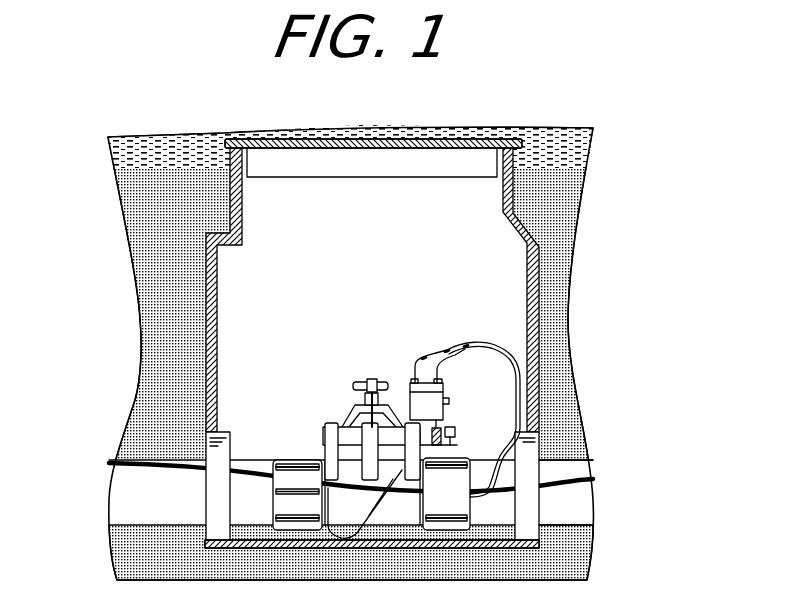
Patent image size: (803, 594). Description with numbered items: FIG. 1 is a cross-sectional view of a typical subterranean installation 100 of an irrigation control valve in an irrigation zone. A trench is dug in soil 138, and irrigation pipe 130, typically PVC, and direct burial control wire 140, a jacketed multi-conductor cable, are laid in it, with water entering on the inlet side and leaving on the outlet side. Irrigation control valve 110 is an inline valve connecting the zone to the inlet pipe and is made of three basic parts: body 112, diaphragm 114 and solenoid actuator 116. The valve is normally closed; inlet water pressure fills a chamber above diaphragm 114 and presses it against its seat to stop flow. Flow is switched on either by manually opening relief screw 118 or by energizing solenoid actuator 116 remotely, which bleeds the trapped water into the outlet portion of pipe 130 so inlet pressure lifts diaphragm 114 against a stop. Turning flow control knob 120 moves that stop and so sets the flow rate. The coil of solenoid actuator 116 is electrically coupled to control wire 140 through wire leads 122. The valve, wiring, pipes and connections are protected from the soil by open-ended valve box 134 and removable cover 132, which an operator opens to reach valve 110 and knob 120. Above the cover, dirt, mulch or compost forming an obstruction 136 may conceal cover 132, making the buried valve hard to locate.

The irrigation valve system 100 is at (70, 68).
The irrigation control valve 110 is at (313, 333).
The body 112 is at (344, 411).
The diaphragm 114 is at (322, 446).
The solenoid actuator 116 is at (445, 400).
The relief screw 118 is at (456, 436).
The flow control knob 120 is at (374, 380).
The wire leads 122 is at (455, 346).
The irrigation pipe 130 is at (568, 513).
The removable cover 132 is at (455, 139).
The valve box 134 is at (527, 266).
The obstruction 136 is at (200, 138).
The soil 138 is at (388, 332).
The direct burial control wire 140 is at (620, 450).